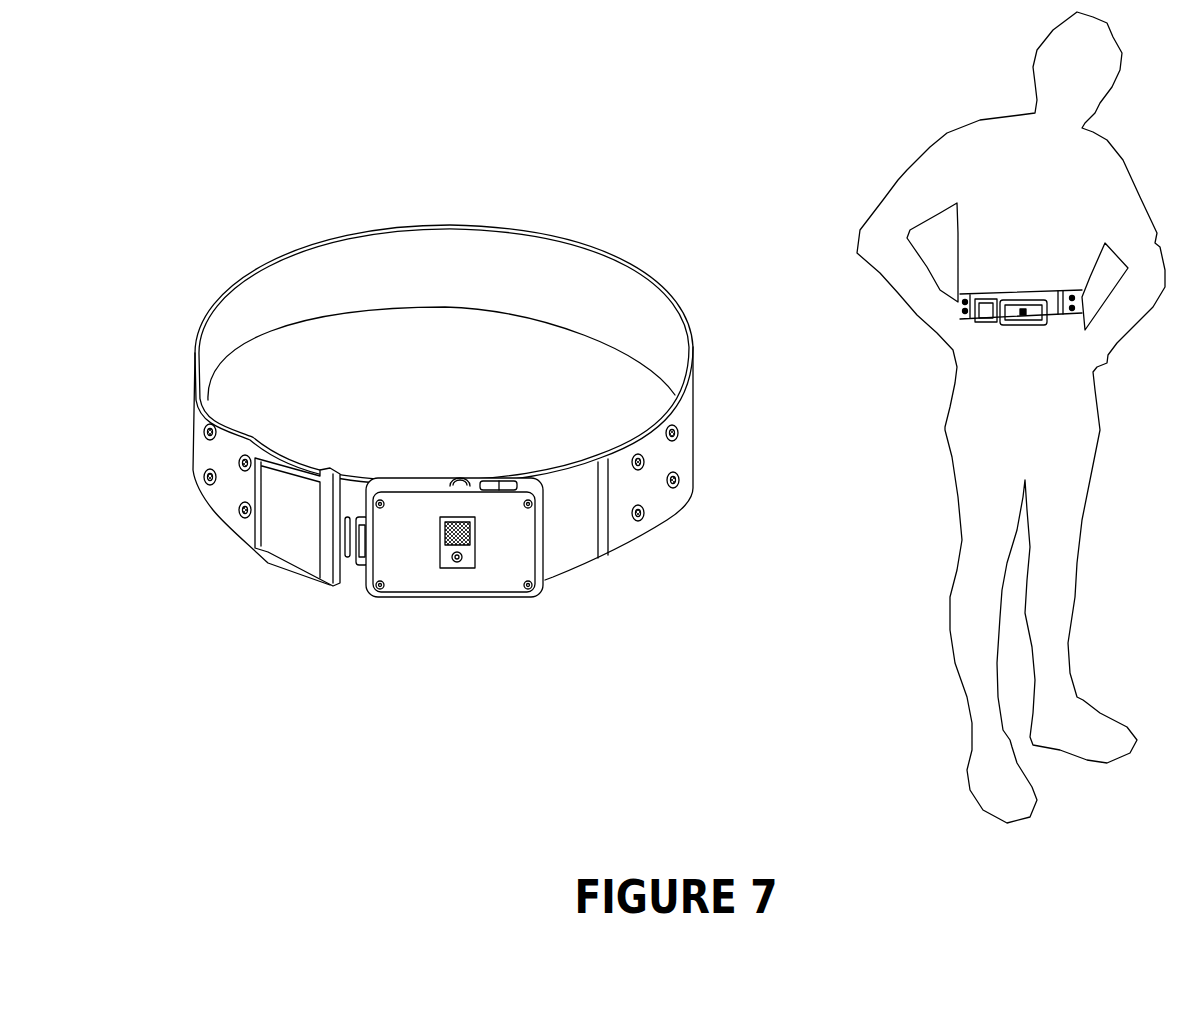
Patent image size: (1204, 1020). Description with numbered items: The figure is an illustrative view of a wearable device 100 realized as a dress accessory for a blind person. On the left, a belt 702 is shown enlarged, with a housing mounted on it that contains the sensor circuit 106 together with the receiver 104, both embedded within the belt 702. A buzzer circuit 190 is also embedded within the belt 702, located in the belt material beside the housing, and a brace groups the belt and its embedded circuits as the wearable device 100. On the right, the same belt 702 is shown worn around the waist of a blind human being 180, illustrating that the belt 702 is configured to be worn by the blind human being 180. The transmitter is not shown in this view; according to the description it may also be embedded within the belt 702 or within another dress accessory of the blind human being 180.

The wearable device 100 is at (609, 483).
The belt 702 is at (260, 270).
The sensor circuit 106 is at (508, 593).
The receiver 104 is at (457, 568).
The buzzer circuit 190 is at (672, 492).
The blind human being 180 is at (933, 147).